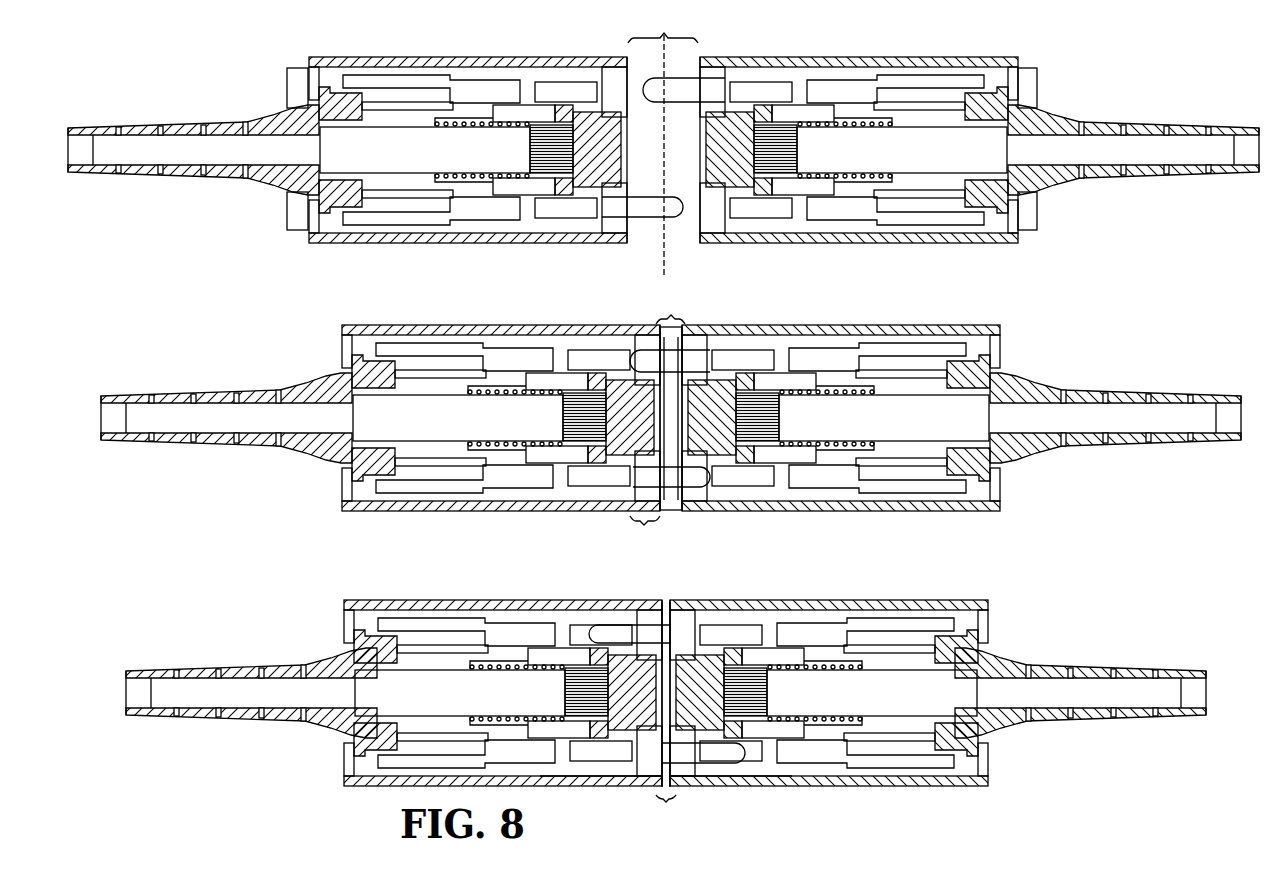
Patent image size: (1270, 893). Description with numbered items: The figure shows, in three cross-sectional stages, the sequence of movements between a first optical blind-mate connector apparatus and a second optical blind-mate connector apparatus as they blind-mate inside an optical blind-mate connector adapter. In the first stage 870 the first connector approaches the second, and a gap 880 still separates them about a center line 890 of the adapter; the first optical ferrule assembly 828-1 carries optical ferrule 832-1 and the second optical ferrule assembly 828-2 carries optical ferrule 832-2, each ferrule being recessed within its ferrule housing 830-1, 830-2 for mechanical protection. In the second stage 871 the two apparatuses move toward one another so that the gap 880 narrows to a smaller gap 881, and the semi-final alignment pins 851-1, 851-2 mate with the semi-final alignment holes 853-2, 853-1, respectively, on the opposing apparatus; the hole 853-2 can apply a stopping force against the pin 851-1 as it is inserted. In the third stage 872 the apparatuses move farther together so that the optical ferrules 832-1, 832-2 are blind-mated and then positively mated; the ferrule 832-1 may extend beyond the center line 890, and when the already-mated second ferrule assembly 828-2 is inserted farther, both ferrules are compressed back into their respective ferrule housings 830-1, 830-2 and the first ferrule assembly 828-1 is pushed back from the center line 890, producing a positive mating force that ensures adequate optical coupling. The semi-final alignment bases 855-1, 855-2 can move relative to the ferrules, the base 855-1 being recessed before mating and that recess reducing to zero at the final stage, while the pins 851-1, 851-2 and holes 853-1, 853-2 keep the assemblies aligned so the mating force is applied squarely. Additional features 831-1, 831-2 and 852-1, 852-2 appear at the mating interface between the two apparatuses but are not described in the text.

The first stage of blind-mating sequence 870 is at (224, 78).
The second stage of blind-mating sequence 871 is at (236, 330).
The third stage of blind-mating sequence 872 is at (233, 606).
The first optical ferrule assembly 828-1 is at (287, 88).
The second optical ferrule assembly 828-2 is at (1038, 88).
The semi-final alignment hole 853-1 is at (567, 80).
The semi-final alignment hole 853-2 is at (780, 230).
The optical ferrule 832-1 is at (583, 185).
The optical ferrule 832-2 is at (748, 112).
The semi-final alignment pin 851-1 is at (648, 217).
The semi-final alignment pin 851-2 is at (668, 102).
The gap 880 is at (663, 28).
The center line 890 is at (668, 57).
The first alignment sleeve portion 831-1 is at (665, 470).
The second alignment sleeve portion 831-2 is at (683, 380).
The first engagement tab 852-1 is at (648, 384).
The second engagement tab 852-2 is at (718, 468).
The gap 881 is at (667, 311).
The semi-final alignment base 855-1 is at (648, 622).
The semi-final alignment base 855-2 is at (697, 622).
The ferrule housing 830-1 is at (565, 787).
The ferrule housing 830-2 is at (783, 787).